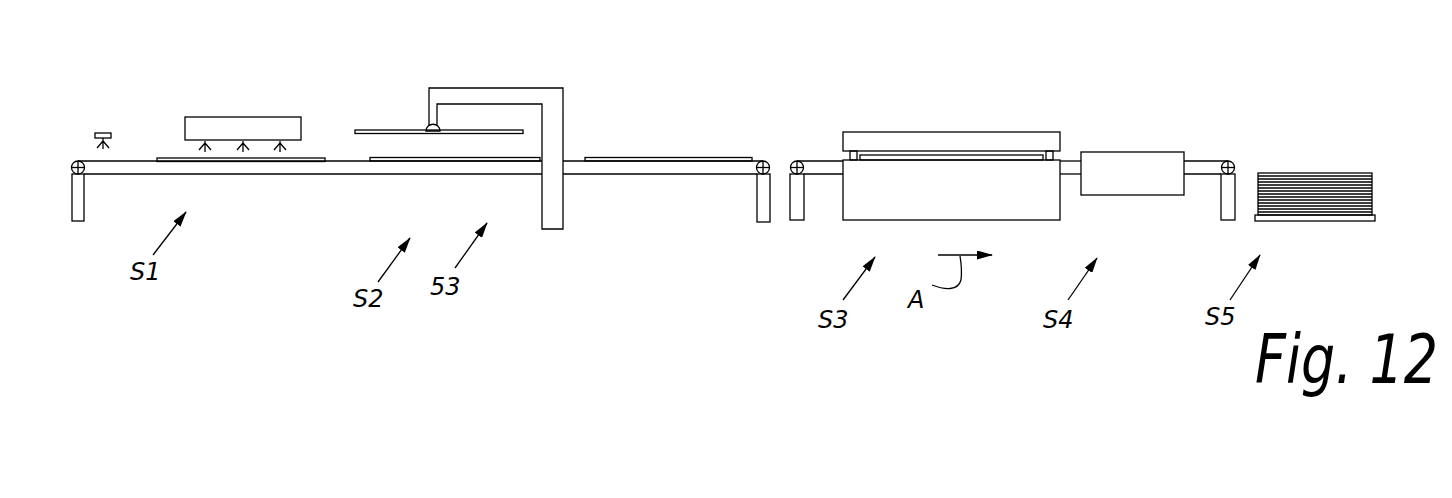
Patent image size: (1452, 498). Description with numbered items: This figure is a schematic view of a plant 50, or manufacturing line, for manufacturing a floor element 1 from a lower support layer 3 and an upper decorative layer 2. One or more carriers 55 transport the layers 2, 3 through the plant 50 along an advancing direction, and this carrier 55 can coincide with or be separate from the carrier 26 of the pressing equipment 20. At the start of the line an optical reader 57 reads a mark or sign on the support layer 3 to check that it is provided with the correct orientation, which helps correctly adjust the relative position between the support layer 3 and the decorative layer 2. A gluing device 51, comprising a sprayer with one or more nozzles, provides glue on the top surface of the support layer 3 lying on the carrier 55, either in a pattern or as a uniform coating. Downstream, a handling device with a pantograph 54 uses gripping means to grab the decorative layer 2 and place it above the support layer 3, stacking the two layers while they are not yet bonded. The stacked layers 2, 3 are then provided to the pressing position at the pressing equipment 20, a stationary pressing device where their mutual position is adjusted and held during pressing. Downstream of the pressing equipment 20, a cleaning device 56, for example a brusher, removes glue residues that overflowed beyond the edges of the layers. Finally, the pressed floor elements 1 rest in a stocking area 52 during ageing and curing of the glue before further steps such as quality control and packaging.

The floor element 1 is at (600, 152).
The decorative layer 2 is at (390, 129).
The support layer 3 is at (177, 161).
The pressing equipment 20 is at (853, 118).
The carrier 26 is at (1212, 158).
The plant 50 is at (204, 86).
The gluing device 51 is at (265, 117).
The stocking area 52 is at (1312, 167).
The pantograph 54 is at (494, 93).
The carrier 55 is at (670, 172).
The cleaning device 56 is at (1132, 188).
The optical reader 57 is at (104, 132).